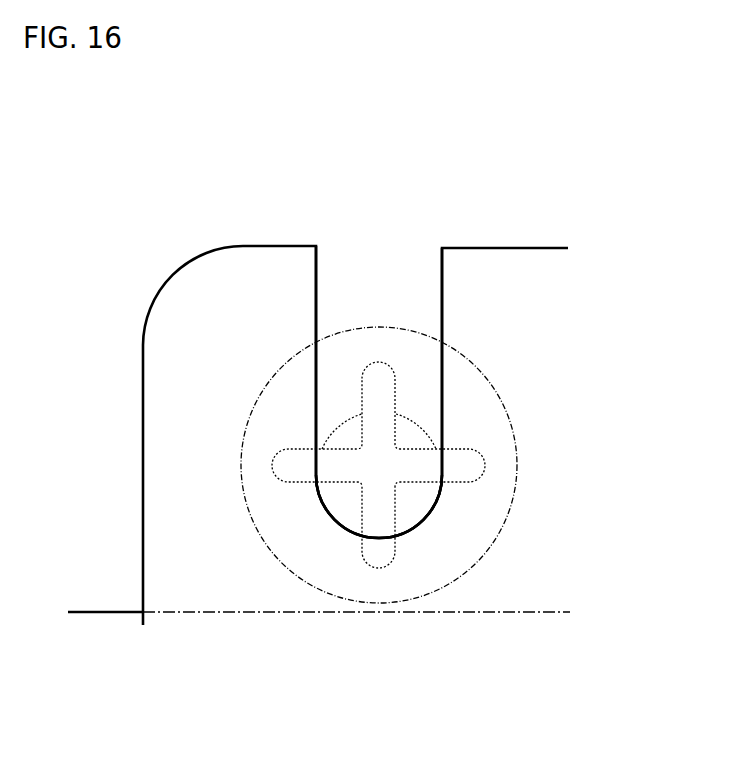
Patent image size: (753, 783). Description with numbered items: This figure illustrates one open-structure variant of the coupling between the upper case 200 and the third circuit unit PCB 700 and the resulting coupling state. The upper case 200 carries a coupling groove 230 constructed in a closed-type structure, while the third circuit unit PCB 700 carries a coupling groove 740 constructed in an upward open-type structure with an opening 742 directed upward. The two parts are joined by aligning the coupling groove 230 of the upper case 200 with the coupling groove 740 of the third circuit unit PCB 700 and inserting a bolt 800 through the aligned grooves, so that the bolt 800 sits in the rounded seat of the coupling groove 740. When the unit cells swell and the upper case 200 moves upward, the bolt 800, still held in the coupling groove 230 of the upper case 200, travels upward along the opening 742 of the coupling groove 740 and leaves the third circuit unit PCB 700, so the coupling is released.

The third circuit unit PCB 700 is at (518, 248).
The opening 742 is at (368, 260).
The coupling groove 740 is at (430, 512).
The bolt 800 is at (510, 422).
The coupling groove 230 is at (345, 422).
The upper case 200 is at (93, 612).